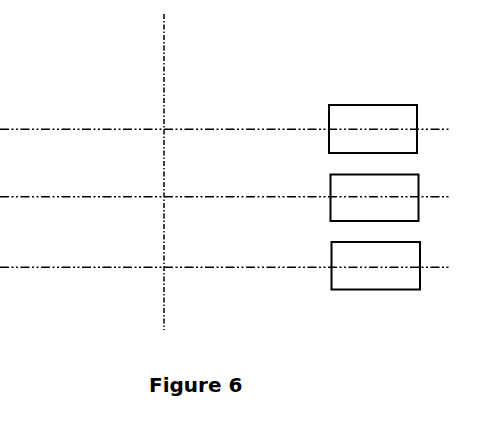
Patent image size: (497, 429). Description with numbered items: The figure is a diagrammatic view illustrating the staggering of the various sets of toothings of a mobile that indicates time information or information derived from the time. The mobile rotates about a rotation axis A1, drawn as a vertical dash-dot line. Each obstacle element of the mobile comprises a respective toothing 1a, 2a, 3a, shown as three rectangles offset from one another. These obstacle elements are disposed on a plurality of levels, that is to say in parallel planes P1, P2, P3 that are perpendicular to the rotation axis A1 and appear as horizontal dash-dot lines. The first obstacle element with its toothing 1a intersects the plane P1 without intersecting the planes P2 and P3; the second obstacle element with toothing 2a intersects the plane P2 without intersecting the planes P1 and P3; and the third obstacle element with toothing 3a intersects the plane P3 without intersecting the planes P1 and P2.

The rotation axis A1 is at (153, 41).
The first plane P1 is at (447, 257).
The second plane P2 is at (445, 186).
The third plane P3 is at (445, 118).
The toothing 1a is at (320, 248).
The toothing 2a is at (314, 178).
The toothing 3a is at (314, 111).